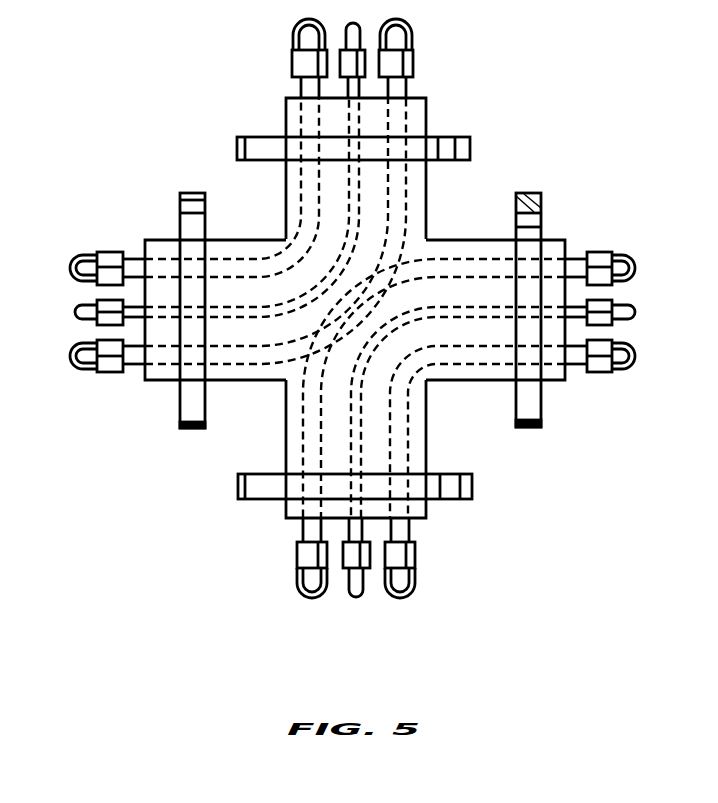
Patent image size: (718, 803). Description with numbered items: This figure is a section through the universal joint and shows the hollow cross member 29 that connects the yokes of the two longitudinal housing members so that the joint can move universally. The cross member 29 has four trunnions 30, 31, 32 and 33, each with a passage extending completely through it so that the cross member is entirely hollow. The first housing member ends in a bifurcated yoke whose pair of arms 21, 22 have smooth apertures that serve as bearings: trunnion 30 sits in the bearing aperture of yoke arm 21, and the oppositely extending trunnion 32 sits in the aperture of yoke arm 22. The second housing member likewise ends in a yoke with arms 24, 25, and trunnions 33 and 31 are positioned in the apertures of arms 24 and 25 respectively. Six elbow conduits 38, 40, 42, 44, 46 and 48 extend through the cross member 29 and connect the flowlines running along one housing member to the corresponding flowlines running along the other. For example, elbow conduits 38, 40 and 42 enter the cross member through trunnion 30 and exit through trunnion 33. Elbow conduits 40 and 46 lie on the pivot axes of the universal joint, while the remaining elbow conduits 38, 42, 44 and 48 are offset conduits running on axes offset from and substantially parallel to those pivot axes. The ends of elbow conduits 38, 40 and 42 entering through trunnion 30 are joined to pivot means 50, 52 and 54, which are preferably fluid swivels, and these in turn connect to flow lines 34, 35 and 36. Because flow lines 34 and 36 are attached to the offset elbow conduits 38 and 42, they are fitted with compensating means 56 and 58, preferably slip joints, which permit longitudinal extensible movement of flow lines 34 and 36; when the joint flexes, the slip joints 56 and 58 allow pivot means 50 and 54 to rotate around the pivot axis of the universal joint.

The yoke arm 21 is at (472, 486).
The yoke arm 22 is at (243, 150).
The yoke arm 24 is at (527, 212).
The yoke arm 25 is at (190, 193).
The cross member 29 is at (237, 435).
The trunnion 30 is at (437, 508).
The trunnion 31 is at (165, 248).
The trunnion 32 is at (418, 117).
The trunnion 33 is at (553, 247).
The flow line 34 is at (405, 532).
The flow line 35 is at (636, 310).
The flow line 36 is at (311, 532).
The elbow conduit 38 is at (477, 432).
The elbow conduit 40 is at (493, 308).
The elbow conduit 42 is at (434, 368).
The elbow conduit 44 is at (398, 195).
The elbow conduit 46 is at (352, 195).
The elbow conduit 48 is at (306, 206).
The pivot means 50 is at (414, 555).
The pivot means 52 is at (346, 588).
The pivot means 54 is at (299, 555).
The compensating means 56 is at (416, 588).
The compensating means 58 is at (300, 588).